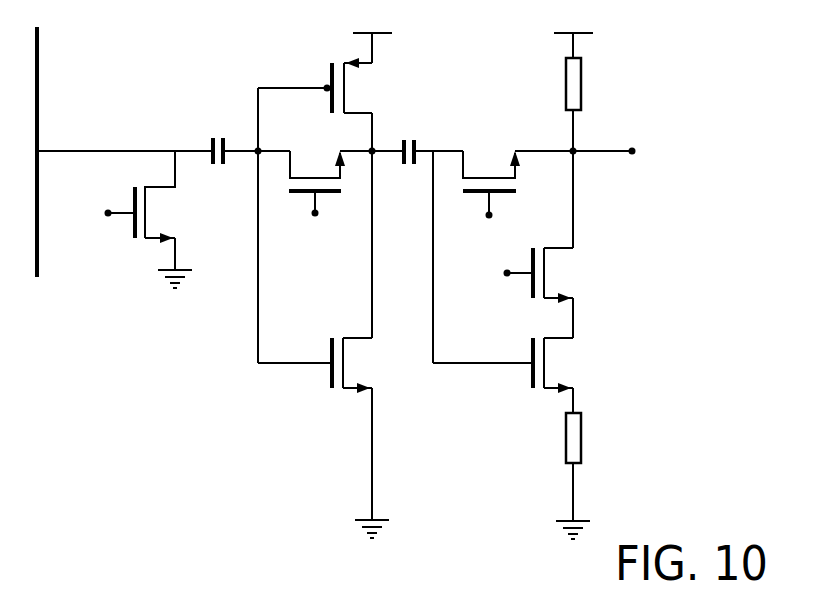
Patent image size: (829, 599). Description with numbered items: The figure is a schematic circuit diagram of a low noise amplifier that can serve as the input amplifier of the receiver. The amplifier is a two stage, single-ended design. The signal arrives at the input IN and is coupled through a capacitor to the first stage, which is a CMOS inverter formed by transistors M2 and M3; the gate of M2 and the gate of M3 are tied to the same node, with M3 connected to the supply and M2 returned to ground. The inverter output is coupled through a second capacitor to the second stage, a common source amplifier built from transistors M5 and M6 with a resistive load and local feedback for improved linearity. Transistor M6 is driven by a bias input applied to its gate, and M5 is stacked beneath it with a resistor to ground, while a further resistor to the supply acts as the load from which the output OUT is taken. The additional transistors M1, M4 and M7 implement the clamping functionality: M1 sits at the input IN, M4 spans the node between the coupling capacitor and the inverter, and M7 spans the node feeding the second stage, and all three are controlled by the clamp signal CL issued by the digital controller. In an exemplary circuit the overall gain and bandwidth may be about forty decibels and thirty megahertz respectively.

The clamping transistor M1 is at (153, 219).
The first stage inverter transistor M2 is at (328, 429).
The first stage inverter transistor M3 is at (328, 73).
The clamping transistor M4 is at (346, 169).
The second stage common source transistor M5 is at (516, 375).
The second stage common source transistor M6 is at (534, 293).
The clamping transistor M7 is at (518, 173).
The input IN is at (124, 133).
The output OUT is at (616, 166).
The clamp signal CL is at (283, 228).
The element bias is at (500, 286).